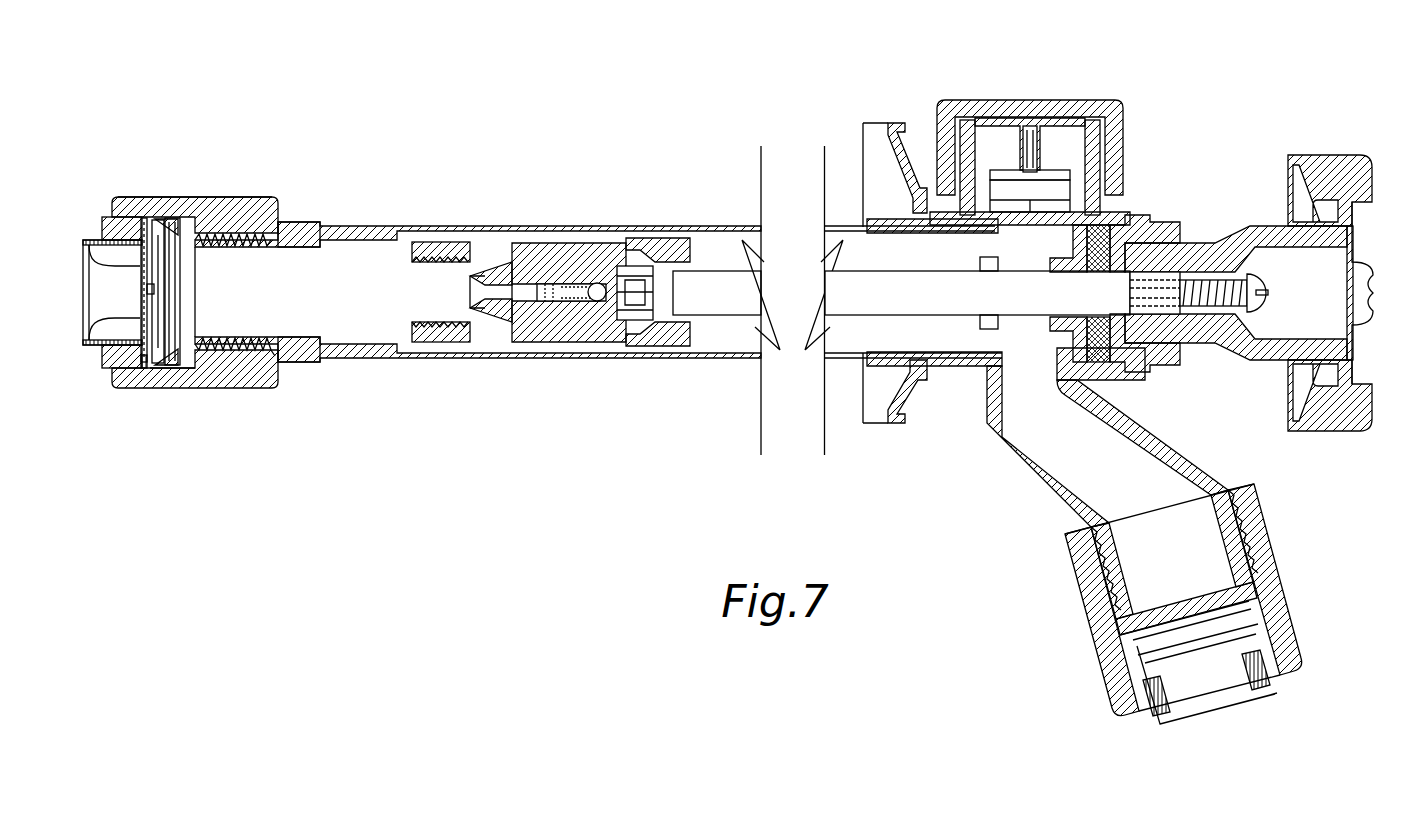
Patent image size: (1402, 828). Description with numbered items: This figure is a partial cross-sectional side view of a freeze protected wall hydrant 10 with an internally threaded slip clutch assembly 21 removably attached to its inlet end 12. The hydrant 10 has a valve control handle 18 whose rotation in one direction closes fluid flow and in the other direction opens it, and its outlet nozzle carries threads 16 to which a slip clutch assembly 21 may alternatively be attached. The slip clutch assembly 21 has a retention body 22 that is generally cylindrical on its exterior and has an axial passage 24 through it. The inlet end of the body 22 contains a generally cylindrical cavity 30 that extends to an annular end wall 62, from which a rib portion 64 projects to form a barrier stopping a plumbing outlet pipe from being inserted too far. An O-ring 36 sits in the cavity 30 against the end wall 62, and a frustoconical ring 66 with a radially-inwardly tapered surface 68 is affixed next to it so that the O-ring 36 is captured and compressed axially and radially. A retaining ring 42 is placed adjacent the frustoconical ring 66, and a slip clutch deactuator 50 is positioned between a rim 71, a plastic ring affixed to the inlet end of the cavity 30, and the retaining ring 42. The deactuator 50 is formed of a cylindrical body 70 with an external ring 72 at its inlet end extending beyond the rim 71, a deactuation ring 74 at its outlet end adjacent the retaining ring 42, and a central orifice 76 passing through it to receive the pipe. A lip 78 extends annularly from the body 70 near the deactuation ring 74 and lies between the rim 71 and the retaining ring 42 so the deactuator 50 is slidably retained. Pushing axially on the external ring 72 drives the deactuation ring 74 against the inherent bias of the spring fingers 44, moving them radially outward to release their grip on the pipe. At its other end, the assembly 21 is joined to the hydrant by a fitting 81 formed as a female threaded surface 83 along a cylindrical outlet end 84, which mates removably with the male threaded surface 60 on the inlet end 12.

The wall hydrant 10 is at (905, 65).
The inlet end 12 is at (310, 226).
The threads 16 is at (1262, 528).
The valve control handle 18 is at (1337, 432).
The slip clutch assembly 21 is at (257, 205).
The retention body 22 is at (237, 385).
The axial passage 24 is at (193, 326).
The cavity 30 is at (143, 368).
The O-ring 36 is at (180, 296).
The retaining ring 42 is at (143, 262).
The spring fingers 44 is at (160, 215).
The slip clutch deactuator 50 is at (83, 325).
The threaded surface 60 is at (262, 383).
The end wall 62 is at (177, 365).
The rib portion 64 is at (197, 250).
The frustoconical ring 66 is at (158, 302).
The tapered surface 68 is at (158, 368).
The cylindrical body 70 is at (92, 238).
The rim 71 is at (112, 370).
The external ring 72 is at (90, 240).
The deactuation ring 74 is at (95, 330).
The central orifice 76 is at (92, 255).
The lip 78 is at (150, 215).
The fitting 81 is at (266, 238).
The female threaded surface 83 is at (258, 345).
The cylindrical outlet end 84 is at (210, 197).